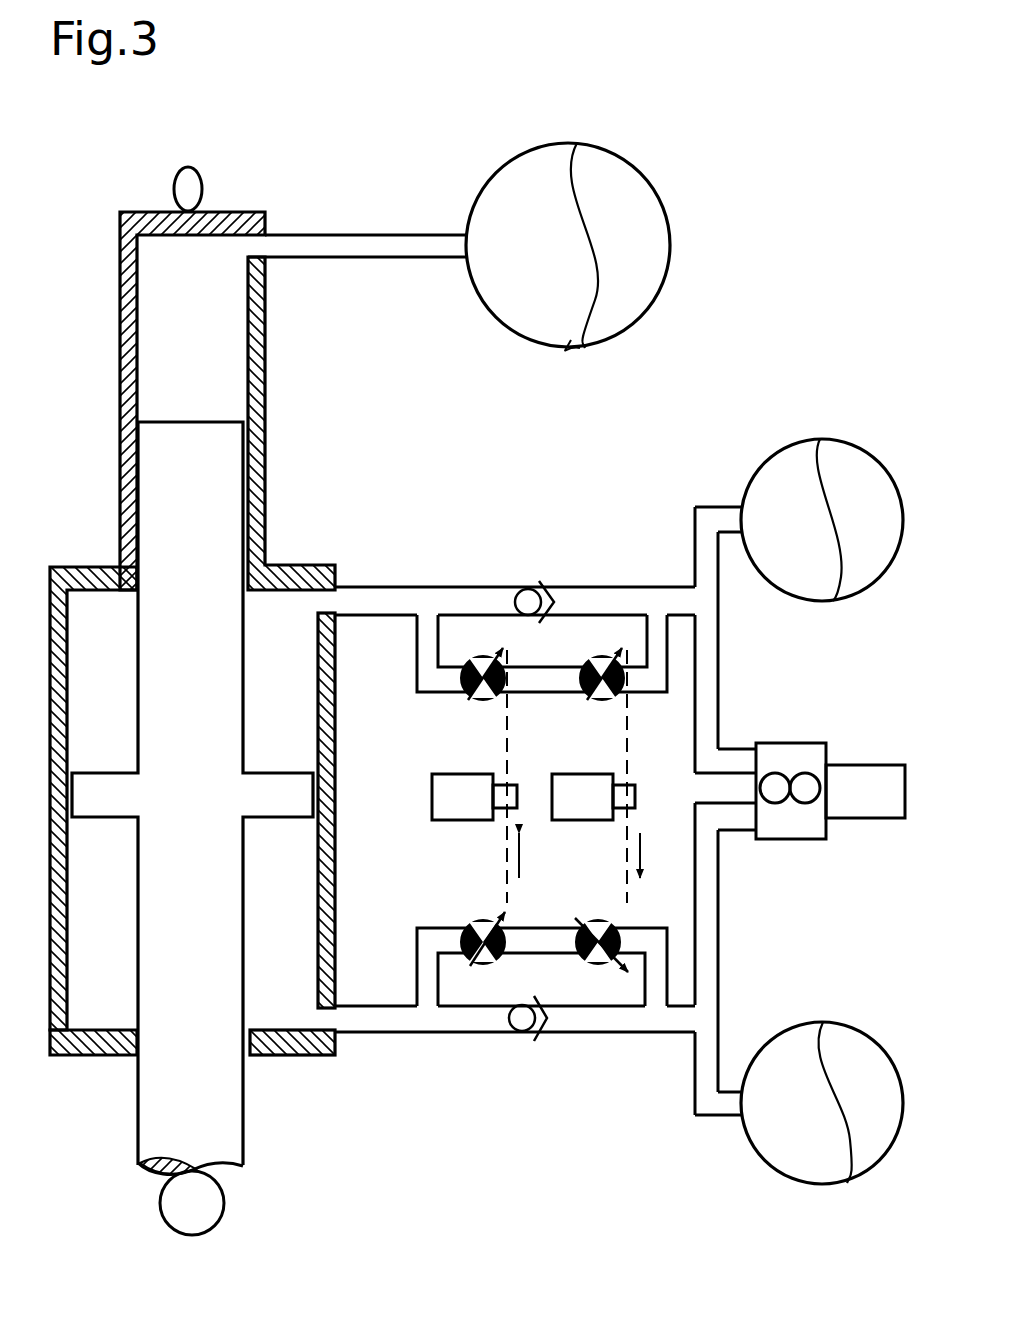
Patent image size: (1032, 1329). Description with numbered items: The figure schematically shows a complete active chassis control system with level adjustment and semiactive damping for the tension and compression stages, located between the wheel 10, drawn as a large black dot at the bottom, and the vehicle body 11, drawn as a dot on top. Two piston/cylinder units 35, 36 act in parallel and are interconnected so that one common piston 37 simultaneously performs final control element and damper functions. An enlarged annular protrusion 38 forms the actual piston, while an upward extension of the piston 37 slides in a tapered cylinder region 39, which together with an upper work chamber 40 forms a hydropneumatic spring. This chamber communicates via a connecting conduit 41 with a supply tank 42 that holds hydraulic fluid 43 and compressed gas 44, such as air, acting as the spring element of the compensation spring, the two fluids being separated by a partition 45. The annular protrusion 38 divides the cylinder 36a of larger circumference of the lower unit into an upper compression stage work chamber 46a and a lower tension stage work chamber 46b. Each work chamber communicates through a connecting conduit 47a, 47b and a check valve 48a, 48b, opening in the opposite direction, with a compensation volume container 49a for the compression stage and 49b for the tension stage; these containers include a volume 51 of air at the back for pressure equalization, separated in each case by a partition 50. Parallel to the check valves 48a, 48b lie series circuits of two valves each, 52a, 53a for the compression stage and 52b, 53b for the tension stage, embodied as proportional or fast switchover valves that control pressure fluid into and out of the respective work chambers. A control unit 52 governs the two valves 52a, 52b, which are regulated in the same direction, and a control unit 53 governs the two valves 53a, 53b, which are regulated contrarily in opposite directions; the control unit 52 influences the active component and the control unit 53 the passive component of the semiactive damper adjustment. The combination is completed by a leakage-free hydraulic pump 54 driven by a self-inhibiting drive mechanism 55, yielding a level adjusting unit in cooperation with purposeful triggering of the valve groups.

The wheel 10 is at (201, 1236).
The vehicle body 11 is at (192, 168).
The piston/cylinder unit 35 is at (272, 432).
The piston/cylinder unit 36 is at (248, 790).
The cylinder 36a is at (67, 1042).
The piston 37 is at (195, 515).
The annular protrusion 38 is at (100, 790).
The tapered cylinder region 39 is at (130, 392).
The upper work chamber 40 is at (155, 265).
The connecting conduit 41 is at (345, 258).
The supply tank 42 is at (577, 140).
The hydraulic fluid 43 is at (502, 178).
The compressed gas 44 is at (632, 175).
The partition 45 is at (571, 342).
The compression stage work chamber 46a is at (275, 645).
The tension stage work chamber 46b is at (278, 941).
The connecting conduit 47a is at (345, 590).
The connecting conduit 47b is at (347, 1055).
The check valve 48a is at (528, 588).
The check valve 48b is at (525, 1032).
The compensation volume container 49a is at (823, 440).
The compensation volume container 49b is at (847, 1185).
The partition 50 is at (838, 588).
The volume of air 51 is at (885, 572).
The control unit 52 is at (447, 800).
The control unit 53 is at (562, 800).
The valve 52a is at (480, 657).
The valve 52b is at (472, 963).
The valve 53a is at (595, 656).
The valve 53b is at (598, 965).
The hydraulic pump 54 is at (831, 741).
The drive mechanism 55 is at (888, 778).